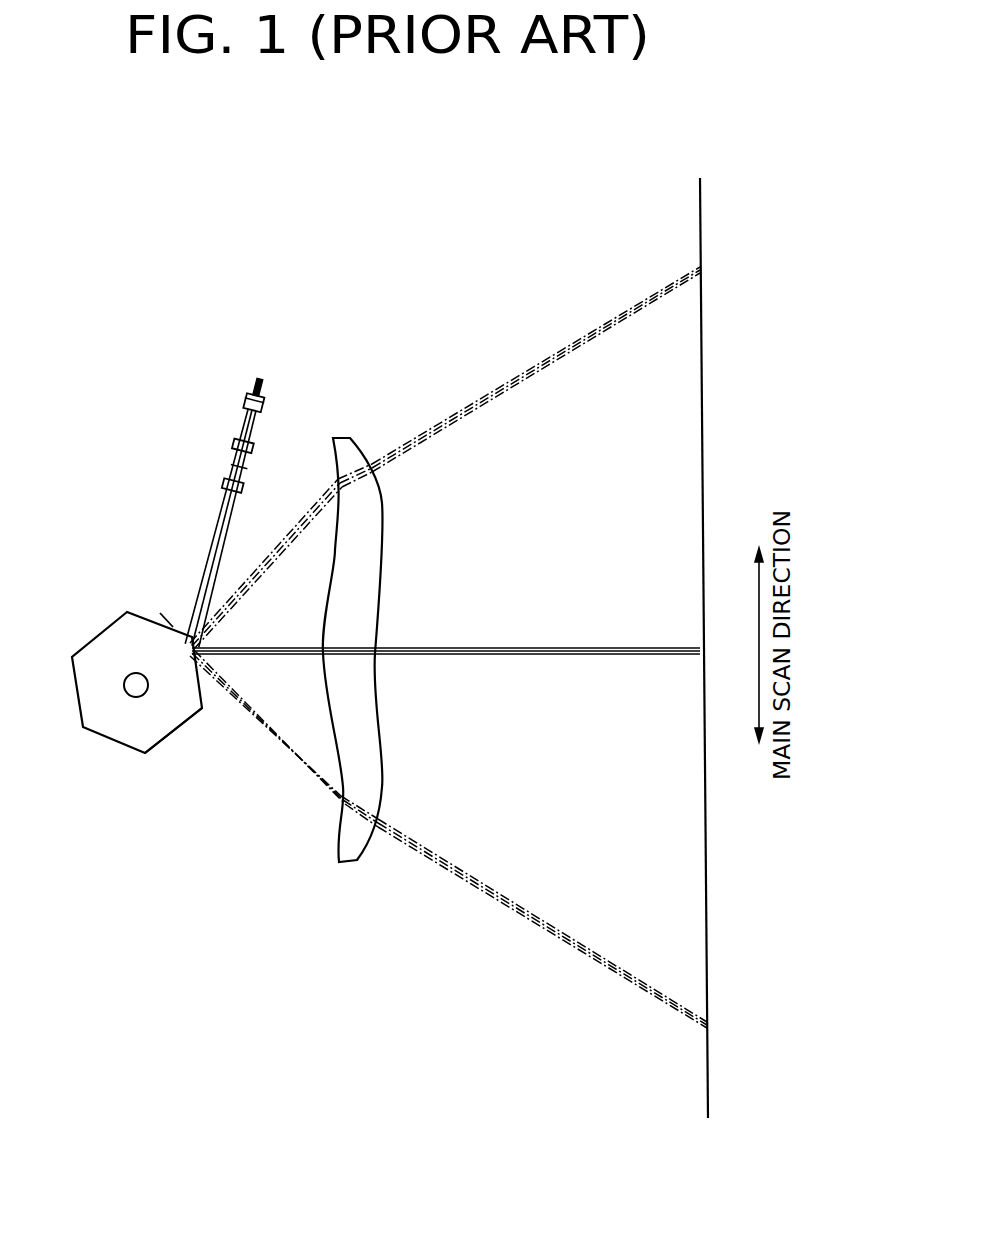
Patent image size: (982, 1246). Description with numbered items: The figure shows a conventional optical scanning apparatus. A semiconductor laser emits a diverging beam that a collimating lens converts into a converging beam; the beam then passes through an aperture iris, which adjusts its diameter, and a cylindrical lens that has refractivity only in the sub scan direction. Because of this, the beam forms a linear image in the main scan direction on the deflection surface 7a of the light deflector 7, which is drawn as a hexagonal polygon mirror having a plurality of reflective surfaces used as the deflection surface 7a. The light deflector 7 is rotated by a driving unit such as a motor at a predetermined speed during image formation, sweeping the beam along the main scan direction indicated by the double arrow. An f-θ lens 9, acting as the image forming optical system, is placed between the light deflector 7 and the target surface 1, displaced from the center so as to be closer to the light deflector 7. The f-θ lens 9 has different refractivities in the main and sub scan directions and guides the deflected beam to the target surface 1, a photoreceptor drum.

The target surface 1 is at (700, 225).
The light deflector 7 is at (110, 768).
The deflection surface 7a is at (177, 733).
The f-θ lens 9 is at (342, 437).